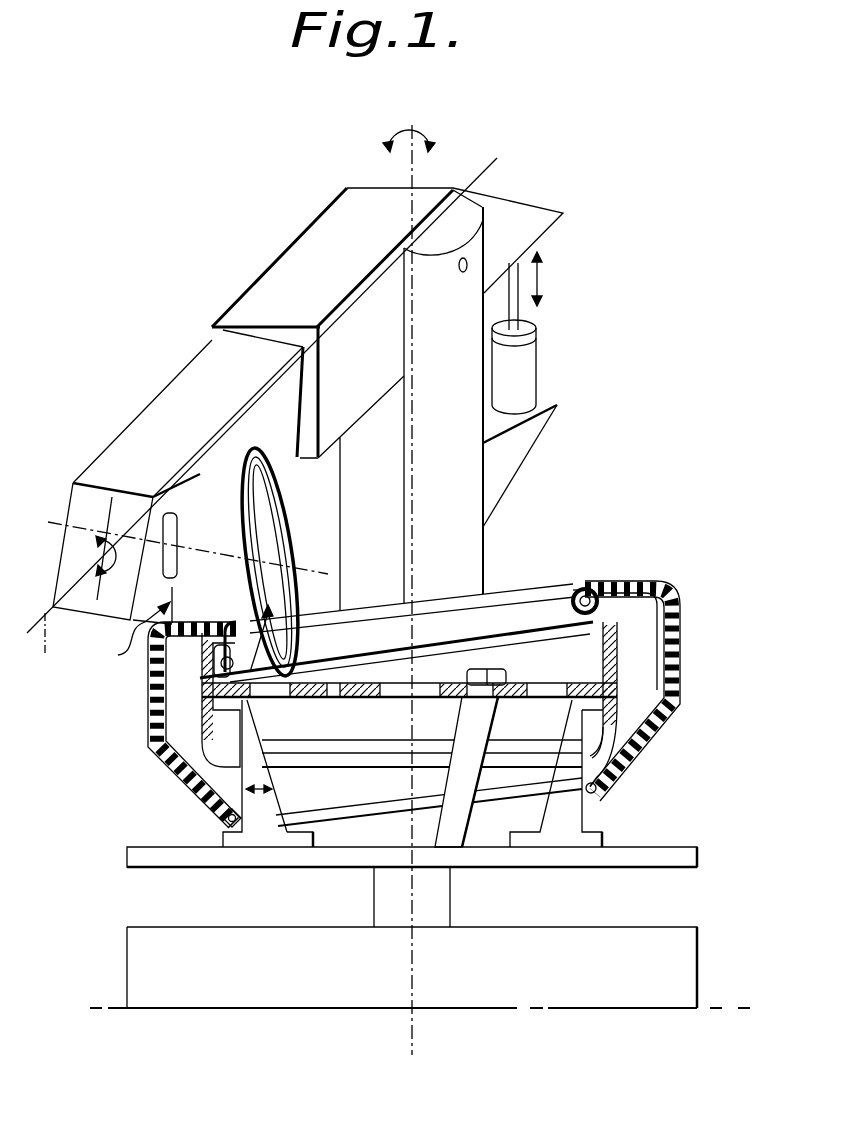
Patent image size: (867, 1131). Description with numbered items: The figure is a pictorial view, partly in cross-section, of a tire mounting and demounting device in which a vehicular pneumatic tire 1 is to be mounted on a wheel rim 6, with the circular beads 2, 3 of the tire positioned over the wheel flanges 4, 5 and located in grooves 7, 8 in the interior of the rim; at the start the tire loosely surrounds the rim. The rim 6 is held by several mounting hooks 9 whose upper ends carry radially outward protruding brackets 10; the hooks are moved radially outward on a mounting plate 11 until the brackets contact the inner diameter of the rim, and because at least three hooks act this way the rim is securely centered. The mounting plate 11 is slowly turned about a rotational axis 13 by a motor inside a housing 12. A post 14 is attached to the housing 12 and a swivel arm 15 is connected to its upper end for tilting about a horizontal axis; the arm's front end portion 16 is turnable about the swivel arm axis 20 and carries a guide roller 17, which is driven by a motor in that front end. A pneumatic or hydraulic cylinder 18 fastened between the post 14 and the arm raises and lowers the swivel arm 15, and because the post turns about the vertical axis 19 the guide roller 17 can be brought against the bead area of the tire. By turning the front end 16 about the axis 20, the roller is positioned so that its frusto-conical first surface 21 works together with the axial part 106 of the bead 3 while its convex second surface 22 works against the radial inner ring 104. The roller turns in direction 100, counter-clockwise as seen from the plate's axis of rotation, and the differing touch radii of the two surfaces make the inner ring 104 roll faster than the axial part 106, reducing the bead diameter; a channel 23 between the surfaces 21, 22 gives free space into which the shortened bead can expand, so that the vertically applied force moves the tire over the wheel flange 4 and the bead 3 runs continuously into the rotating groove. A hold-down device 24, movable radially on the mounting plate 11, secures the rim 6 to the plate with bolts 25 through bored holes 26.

The vehicular pneumatic tire 1 is at (152, 753).
The circular bead 2 is at (224, 818).
The circular bead 3 is at (597, 584).
The wheel flange 4 is at (610, 590).
The wheel flange 5 is at (597, 773).
The wheel rim 6 is at (363, 700).
The groove 7 is at (610, 629).
The groove 8 is at (600, 747).
The mounting hook 9 is at (270, 833).
The bracket 10 is at (218, 703).
The mounting plate 11 is at (133, 860).
The housing 12 is at (130, 968).
The rotational axis 13 is at (413, 965).
The post 14 is at (553, 521).
The swivel arm 15 is at (300, 246).
The front end portion 16 is at (197, 377).
The guide roller 17 is at (127, 638).
The cylinder 18 is at (522, 360).
The vertical axis 19 is at (410, 172).
The swivel arm axis 20 is at (259, 424).
The first surface 21 is at (216, 497).
The second surface 22 is at (292, 525).
The channel 23 is at (248, 525).
The hold-down device 24 is at (472, 726).
The bolt 25 is at (478, 668).
The bored hole 26 is at (331, 690).
The turning direction 100 is at (270, 629).
The radial inner ring 104 is at (643, 524).
The axial part 106 is at (247, 620).